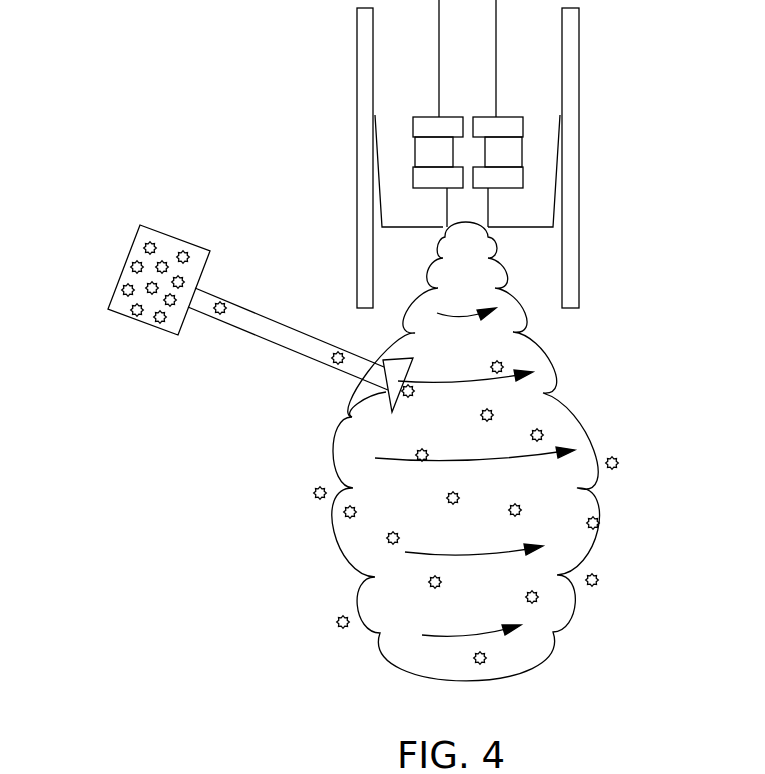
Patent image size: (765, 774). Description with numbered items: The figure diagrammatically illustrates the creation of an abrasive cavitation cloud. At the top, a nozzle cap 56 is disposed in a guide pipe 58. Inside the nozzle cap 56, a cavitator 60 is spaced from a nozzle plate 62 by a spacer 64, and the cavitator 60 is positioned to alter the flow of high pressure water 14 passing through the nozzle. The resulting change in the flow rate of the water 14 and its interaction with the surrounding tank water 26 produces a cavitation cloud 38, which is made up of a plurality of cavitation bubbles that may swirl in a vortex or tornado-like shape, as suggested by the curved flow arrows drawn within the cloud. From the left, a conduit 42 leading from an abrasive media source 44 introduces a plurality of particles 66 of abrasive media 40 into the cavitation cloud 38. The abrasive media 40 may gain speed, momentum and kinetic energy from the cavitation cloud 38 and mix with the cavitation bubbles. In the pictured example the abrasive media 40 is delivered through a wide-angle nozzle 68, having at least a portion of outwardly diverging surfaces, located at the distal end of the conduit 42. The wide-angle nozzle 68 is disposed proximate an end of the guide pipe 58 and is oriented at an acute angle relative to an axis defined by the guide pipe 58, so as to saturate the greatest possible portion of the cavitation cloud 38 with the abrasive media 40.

The high pressure water 14 is at (477, 29).
The tank water 26 is at (637, 379).
The cavitation cloud 38 is at (534, 647).
The abrasive media 40 is at (163, 266).
The conduit 42 is at (225, 318).
The abrasive media source 44 is at (121, 268).
The nozzle cap 56 is at (535, 218).
The guide pipe 58 is at (570, 268).
The cavitator 60 is at (510, 130).
The nozzle plate 62 is at (422, 178).
The spacer 64 is at (422, 152).
The particles 66 is at (600, 521).
The wide-angle nozzle 68 is at (384, 399).